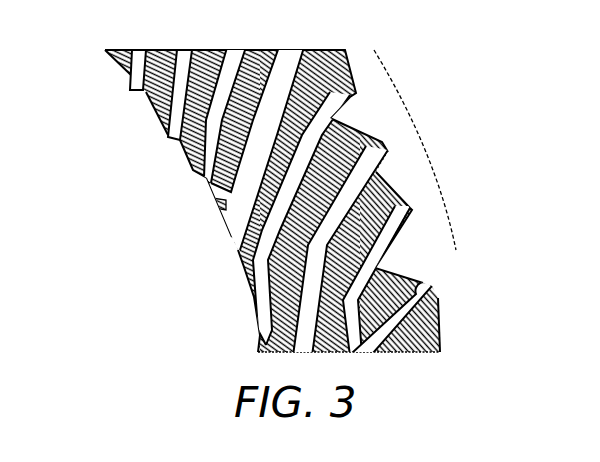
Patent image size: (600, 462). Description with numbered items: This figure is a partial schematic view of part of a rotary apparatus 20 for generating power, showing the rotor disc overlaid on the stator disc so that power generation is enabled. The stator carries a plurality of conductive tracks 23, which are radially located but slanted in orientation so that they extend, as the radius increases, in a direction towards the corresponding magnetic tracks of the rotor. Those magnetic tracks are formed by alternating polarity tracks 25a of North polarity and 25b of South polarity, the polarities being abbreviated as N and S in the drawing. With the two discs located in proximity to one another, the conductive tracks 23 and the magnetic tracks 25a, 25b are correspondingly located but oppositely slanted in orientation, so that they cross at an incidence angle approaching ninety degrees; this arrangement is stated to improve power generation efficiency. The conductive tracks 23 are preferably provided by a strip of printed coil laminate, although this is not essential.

The rotary apparatus 20 is at (216, 330).
The conductive tracks 23 is at (235, 260).
The North polarity track 25a is at (350, 83).
The South polarity track 25b is at (380, 147).
The North magnetic polarity N is at (410, 220).
The South magnetic polarity S is at (431, 291).